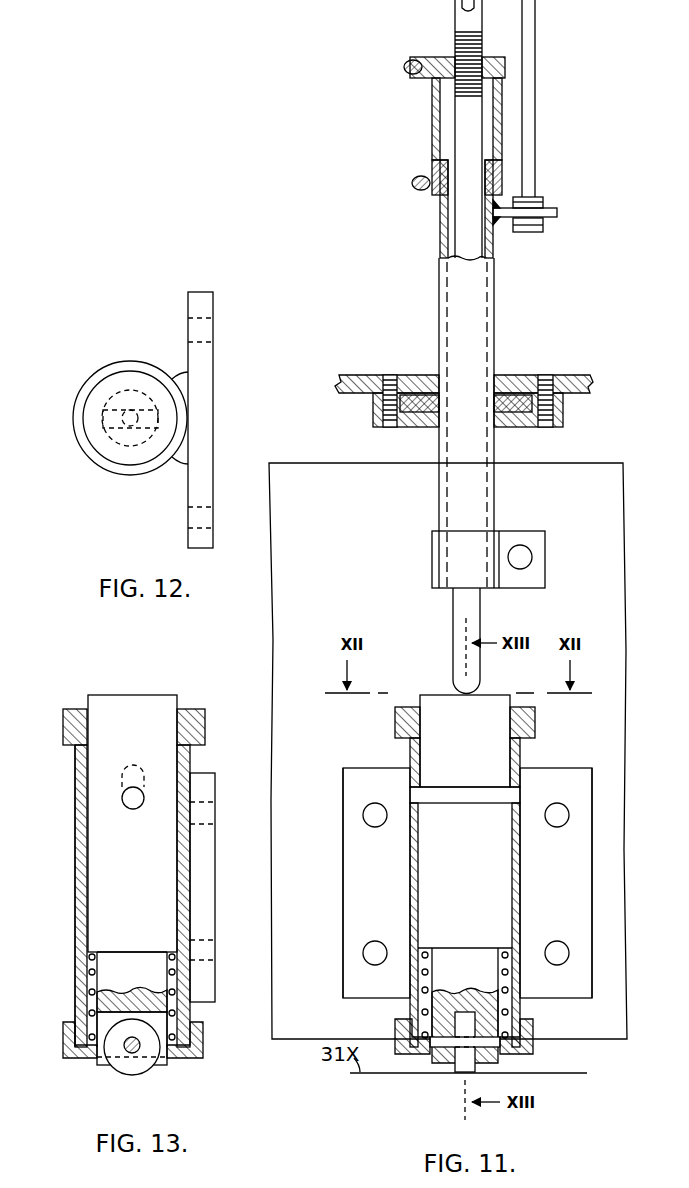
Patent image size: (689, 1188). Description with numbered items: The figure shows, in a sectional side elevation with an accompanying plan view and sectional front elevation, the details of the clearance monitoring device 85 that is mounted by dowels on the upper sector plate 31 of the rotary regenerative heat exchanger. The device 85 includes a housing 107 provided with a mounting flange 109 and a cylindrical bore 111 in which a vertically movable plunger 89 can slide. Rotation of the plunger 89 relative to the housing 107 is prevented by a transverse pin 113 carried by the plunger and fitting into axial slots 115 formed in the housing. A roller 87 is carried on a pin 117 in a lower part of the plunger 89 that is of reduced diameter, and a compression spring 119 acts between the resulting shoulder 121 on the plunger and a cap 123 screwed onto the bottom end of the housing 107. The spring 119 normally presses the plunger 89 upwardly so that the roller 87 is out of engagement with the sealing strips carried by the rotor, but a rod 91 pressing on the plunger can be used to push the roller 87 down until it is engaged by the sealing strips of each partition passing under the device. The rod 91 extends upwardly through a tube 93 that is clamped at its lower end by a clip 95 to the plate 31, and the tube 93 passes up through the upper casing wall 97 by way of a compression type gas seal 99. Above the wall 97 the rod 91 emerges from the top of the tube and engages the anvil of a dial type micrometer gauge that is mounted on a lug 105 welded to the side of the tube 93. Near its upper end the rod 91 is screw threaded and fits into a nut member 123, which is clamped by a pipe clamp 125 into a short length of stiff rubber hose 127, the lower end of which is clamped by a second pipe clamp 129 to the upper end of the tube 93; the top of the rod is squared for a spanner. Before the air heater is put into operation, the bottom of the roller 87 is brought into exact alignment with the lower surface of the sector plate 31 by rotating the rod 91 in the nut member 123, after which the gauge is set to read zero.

In FIG. 11, the upper sector plate 31 is at (282, 640).
In FIG. 11, the clearance monitoring device 85 is at (350, 785).
In FIG. 12, the clearance monitoring device 85 is at (109, 475).
In FIG. 13, the clearance monitoring device 85 is at (80, 843).
In FIG. 11, the roller 87 is at (462, 1065).
In FIG. 12, the roller 87 is at (105, 395).
In FIG. 13, the roller 87 is at (122, 1065).
In FIG. 11, the plunger 89 is at (438, 700).
In FIG. 12, the plunger 89 is at (136, 463).
In FIG. 13, the plunger 89 is at (172, 702).
In FIG. 11, the rod 91 is at (453, 608).
In FIG. 12, the rod 91 is at (128, 408).
In FIG. 11, the tube 93 is at (475, 327).
In FIG. 11, the clip 95 is at (508, 533).
In FIG. 11, the upper casing wall 97 is at (363, 375).
In FIG. 11, the compression type gas seal 99 is at (415, 416).
In FIG. 11, the lug 105 is at (542, 214).
In FIG. 11, the housing 107 is at (522, 854).
In FIG. 13, the housing 107 is at (78, 905).
In FIG. 11, the mounting flange 109 is at (351, 875).
In FIG. 12, the mounting flange 109 is at (204, 412).
In FIG. 13, the mounting flange 109 is at (213, 918).
In FIG. 11, the cylindrical bore 111 is at (418, 858).
In FIG. 13, the cylindrical bore 111 is at (177, 767).
In FIG. 11, the transverse pin 113 is at (445, 800).
In FIG. 13, the transverse pin 113 is at (137, 803).
In FIG. 13, the axial slots 115 is at (135, 764).
In FIG. 13, the pin 117 is at (140, 1052).
In FIG. 13, the compression spring 119 is at (88, 972).
In FIG. 13, the shoulder 121 is at (92, 952).
In FIG. 11, the cap 123 is at (448, 56).
In FIG. 13, the cap 123 is at (65, 1043).
In FIG. 11, the pipe clamp 125 is at (405, 66).
In FIG. 11, the rubber hose 127 is at (432, 134).
In FIG. 11, the second pipe clamp 129 is at (413, 185).